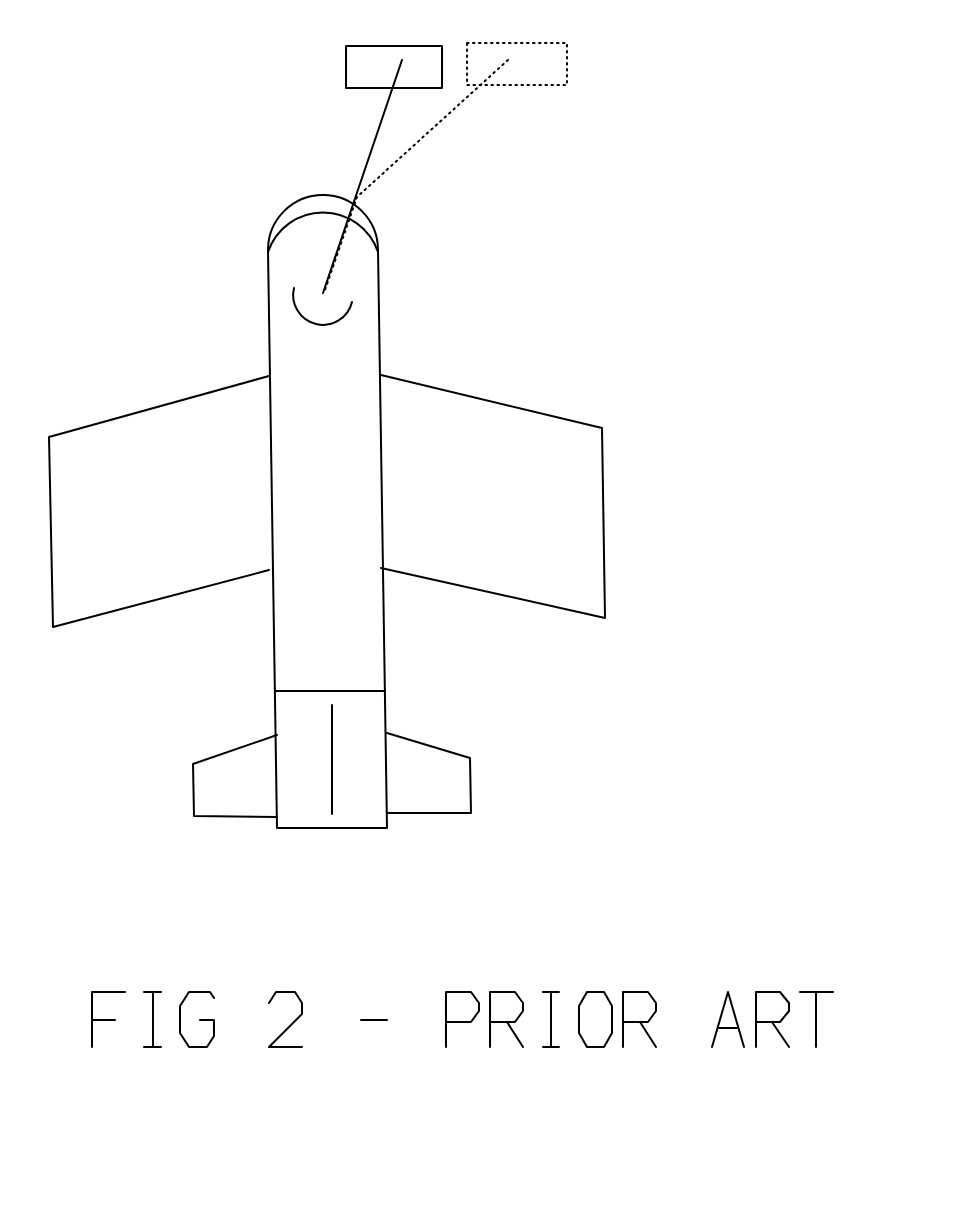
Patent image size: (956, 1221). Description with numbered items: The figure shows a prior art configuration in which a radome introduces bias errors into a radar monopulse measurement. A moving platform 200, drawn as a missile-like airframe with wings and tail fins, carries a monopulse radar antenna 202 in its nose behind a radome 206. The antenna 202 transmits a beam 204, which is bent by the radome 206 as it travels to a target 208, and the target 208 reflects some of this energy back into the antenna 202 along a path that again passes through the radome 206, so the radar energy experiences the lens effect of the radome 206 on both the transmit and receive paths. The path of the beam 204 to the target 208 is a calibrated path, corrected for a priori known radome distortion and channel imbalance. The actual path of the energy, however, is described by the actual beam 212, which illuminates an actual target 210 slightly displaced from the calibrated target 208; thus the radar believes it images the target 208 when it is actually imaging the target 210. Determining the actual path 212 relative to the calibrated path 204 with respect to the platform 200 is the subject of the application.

The moving platform 200 is at (513, 502).
The monopulse radar antenna 202 is at (483, 323).
The beam 204 is at (323, 240).
The radome 206 is at (213, 134).
The target 208 is at (434, 18).
The actual target 210 is at (586, 10).
The actual beam 212 is at (537, 158).